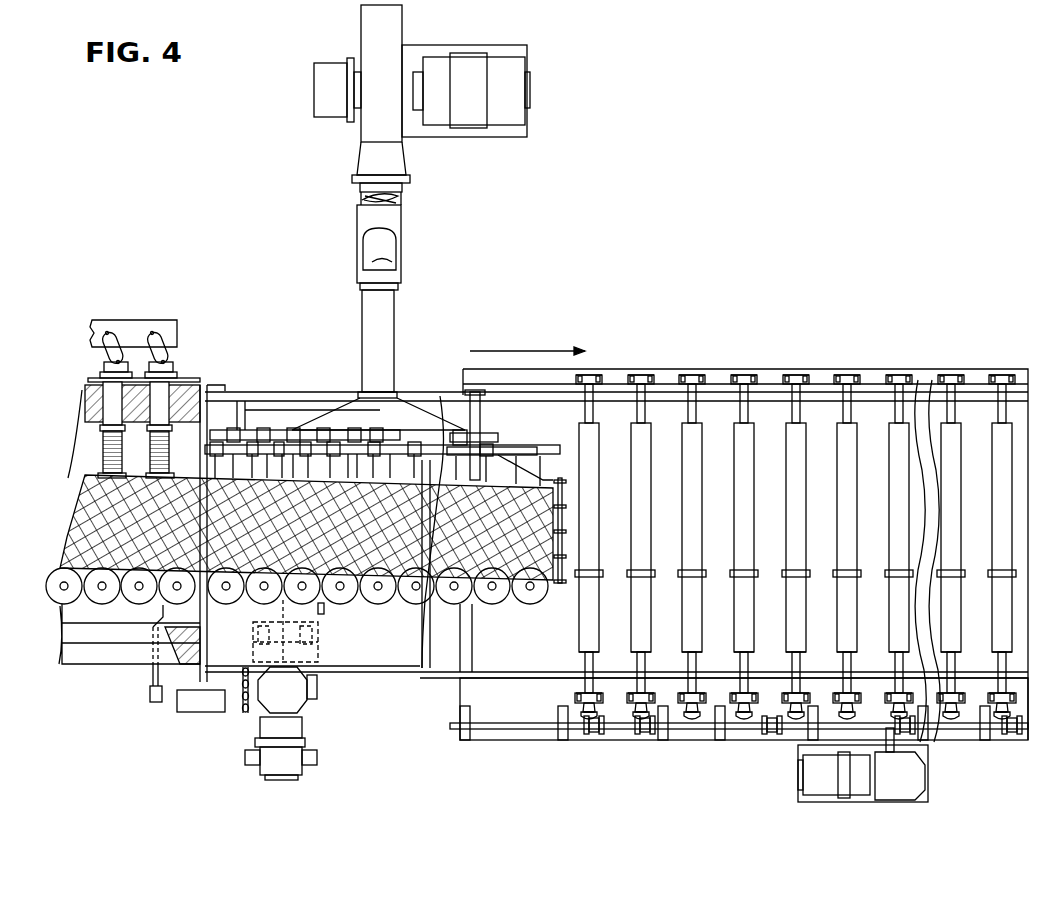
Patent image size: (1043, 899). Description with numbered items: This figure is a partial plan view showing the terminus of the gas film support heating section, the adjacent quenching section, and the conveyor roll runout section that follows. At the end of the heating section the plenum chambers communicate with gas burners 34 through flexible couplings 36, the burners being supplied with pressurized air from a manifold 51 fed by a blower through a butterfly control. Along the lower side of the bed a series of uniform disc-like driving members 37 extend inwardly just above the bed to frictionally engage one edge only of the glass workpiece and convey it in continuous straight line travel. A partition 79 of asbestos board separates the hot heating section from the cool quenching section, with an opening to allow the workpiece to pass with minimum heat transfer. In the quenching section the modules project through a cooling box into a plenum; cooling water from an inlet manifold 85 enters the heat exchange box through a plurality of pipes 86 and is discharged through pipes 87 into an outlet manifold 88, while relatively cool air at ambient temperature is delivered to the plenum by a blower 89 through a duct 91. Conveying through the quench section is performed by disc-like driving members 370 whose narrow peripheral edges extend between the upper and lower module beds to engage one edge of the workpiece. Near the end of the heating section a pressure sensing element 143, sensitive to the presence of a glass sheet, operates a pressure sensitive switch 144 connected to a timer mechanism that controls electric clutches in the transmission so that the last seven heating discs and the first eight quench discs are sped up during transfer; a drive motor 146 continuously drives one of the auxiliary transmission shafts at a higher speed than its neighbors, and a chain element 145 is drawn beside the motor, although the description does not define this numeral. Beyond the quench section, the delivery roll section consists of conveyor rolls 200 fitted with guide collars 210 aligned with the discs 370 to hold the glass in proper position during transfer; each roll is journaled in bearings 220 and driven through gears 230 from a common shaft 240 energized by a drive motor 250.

The gas burner 34 is at (86, 406).
The flexible coupling 36 is at (150, 462).
The disc-like driving member 37 is at (170, 605).
The manifold 51 is at (173, 320).
The partition 79 is at (192, 655).
The inlet manifold 85 is at (533, 450).
The pipe 86 is at (429, 452).
The pipe 87 is at (348, 446).
The outlet manifold 88 is at (498, 441).
The blower 89 is at (361, 136).
The duct 91 is at (361, 335).
The pressure sensing element 143 is at (62, 561).
The pressure sensitive switch 144 is at (150, 696).
The drive chain 145 is at (238, 668).
The drive motor 146 is at (303, 727).
The conveyor roll 200 is at (942, 453).
The guide collar 210 is at (888, 580).
The bearing 220 is at (686, 375).
The gear 230 is at (648, 718).
The common shaft 240 is at (536, 730).
The drive motor 250 is at (818, 777).
The disc-like driving member 370 is at (395, 600).